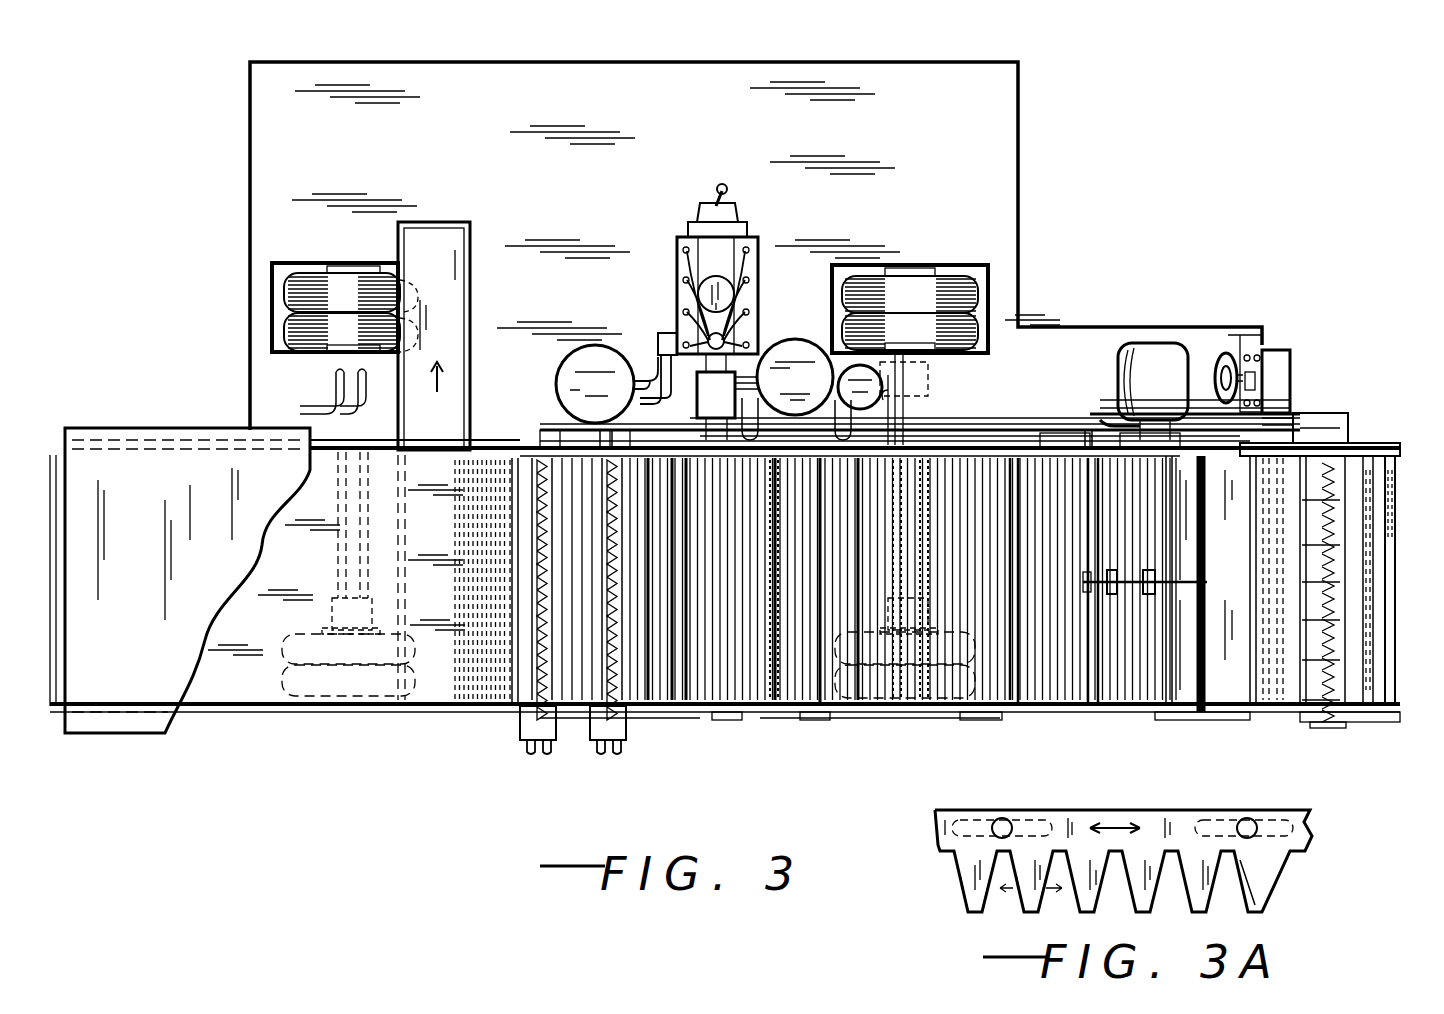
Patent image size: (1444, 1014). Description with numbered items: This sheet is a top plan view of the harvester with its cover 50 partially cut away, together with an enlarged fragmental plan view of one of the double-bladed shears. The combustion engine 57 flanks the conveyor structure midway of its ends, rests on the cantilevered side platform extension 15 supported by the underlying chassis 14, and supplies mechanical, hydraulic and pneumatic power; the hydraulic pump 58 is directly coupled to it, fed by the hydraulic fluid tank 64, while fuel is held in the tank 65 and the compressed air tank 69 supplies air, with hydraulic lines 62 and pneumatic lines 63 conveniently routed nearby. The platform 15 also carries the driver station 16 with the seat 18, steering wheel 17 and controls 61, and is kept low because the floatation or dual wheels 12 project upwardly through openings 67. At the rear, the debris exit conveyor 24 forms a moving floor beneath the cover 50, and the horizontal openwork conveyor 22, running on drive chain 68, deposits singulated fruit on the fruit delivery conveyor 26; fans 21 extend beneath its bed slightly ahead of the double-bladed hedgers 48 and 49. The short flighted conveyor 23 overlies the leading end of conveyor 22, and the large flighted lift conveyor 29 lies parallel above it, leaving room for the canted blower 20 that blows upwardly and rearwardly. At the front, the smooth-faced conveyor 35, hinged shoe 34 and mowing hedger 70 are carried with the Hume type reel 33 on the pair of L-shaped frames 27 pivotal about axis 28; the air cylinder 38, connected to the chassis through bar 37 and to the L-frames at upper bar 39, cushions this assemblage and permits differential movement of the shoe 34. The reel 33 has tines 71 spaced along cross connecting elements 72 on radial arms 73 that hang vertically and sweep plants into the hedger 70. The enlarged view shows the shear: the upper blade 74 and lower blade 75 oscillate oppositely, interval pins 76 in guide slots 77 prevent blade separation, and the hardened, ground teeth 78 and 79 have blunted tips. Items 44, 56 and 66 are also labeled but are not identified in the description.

In FIG. 3, the wheels 12 is at (368, 256).
In FIG. 3, the chassis 14 is at (325, 442).
In FIG. 3, the cantilevered side platform extension 15 is at (1012, 208).
In FIG. 3, the driver station 16 is at (1211, 343).
In FIG. 3, the steering wheel 17 is at (1236, 356).
In FIG. 3, the seat 18 is at (1160, 345).
In FIG. 3, the canted blower 20 is at (767, 732).
In FIG. 3, the fans or blowers 21 is at (545, 424).
In FIG. 3, the horizontal endless openwork conveyor 22 is at (648, 712).
In FIG. 3, the short flighted conveyor 23 is at (822, 708).
In FIG. 3, the debris exit endless driven conveyor 24 is at (228, 690).
In FIG. 3, the fruit delivery conveyor 26 is at (440, 238).
In FIG. 3, the L-shaped frame 27 is at (1258, 430).
In FIG. 3, the axis 28 is at (1185, 722).
In FIG. 3, the large endless flighted lift conveyor 29 is at (1022, 712).
In FIG. 3, the Hume type sweep or reel 33 is at (1354, 738).
In FIG. 3, the hinged shoe 34 is at (1340, 580).
In FIG. 3, the smooth-faced endless conveyor 35 is at (1185, 700).
In FIG. 3, the bar 37 is at (1092, 702).
In FIG. 3, the air cylinder 38 is at (1150, 575).
In FIG. 3, the upper bar 39 is at (1202, 628).
In FIG. 3, the end section 44 is at (1342, 576).
In FIG. 3, the double-bladed hedger 48 is at (580, 748).
In FIG. 3, the double-bladed hedger 49 is at (540, 688).
In FIG. 3, the cover 50 is at (110, 725).
In FIG. 3, the pipes 56 is at (332, 352).
In FIG. 3, the combustion engine 57 is at (774, 230).
In FIG. 3, the hydraulic pump 58 is at (727, 397).
In FIG. 3, the controls 61 is at (1276, 350).
In FIG. 3, the hydraulic lines 62 is at (659, 418).
In FIG. 3, the pneumatic lines 63 is at (1020, 398).
In FIG. 3, the hydraulic fluid tank 64 is at (795, 377).
In FIG. 3, the fuel tank 65 is at (595, 384).
In FIG. 3, the small drum 66 is at (882, 390).
In FIG. 3, the openings 67 is at (288, 275).
In FIG. 3, the drive chain 68 is at (676, 712).
In FIG. 3, the compressed air tank 69 is at (726, 720).
In FIG. 3, the double-bladed mowing hedger 70 is at (1343, 592).
In FIG. 3, the tines 71 is at (1400, 652).
In FIG. 3, the cross connecting elements 72 is at (1396, 512).
In FIG. 3, the radial arms 73 is at (1352, 446).
In FIG. 3A, the upper blade 74 is at (1322, 856).
In FIG. 3A, the lower blade 75 is at (1288, 901).
In FIG. 3A, the interval pins 76 is at (1006, 820).
In FIG. 3A, the guide slots 77 is at (972, 820).
In FIG. 3A, the teeth 78 is at (962, 890).
In FIG. 3A, the teeth 79 is at (1025, 897).